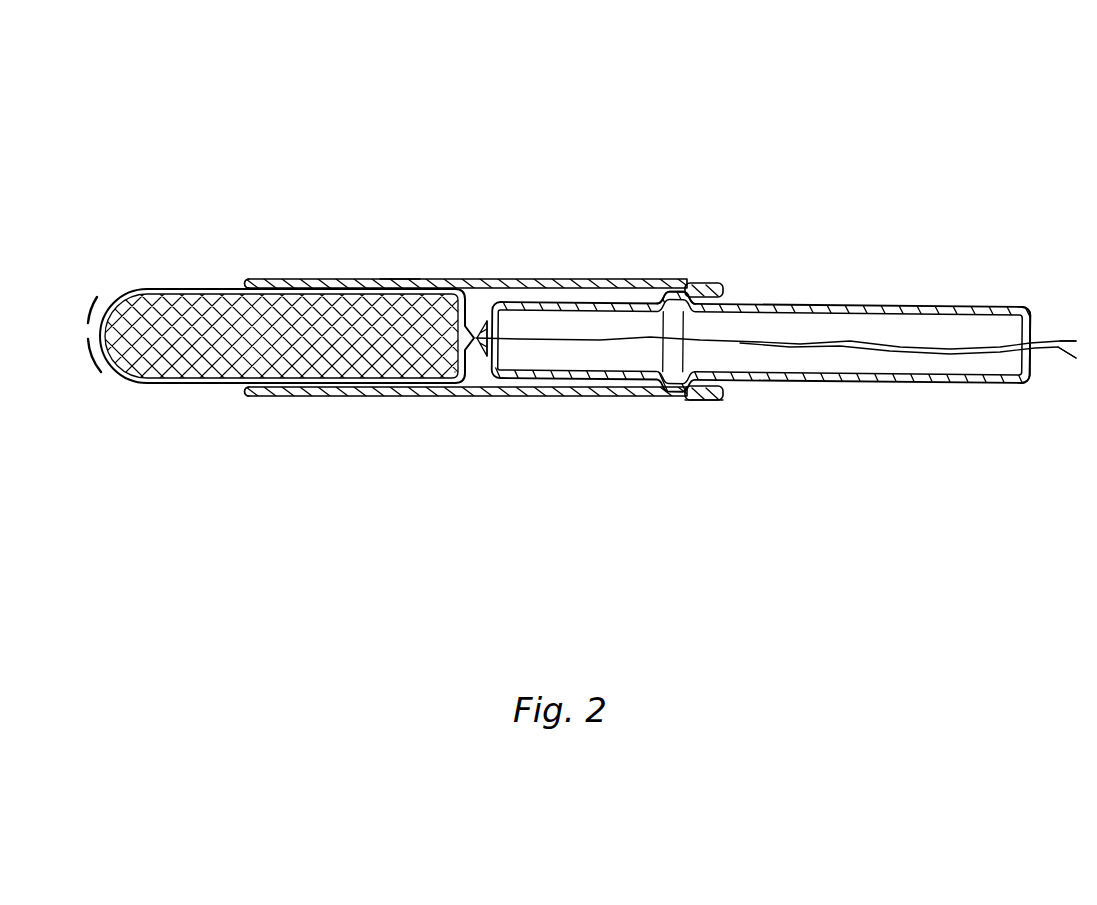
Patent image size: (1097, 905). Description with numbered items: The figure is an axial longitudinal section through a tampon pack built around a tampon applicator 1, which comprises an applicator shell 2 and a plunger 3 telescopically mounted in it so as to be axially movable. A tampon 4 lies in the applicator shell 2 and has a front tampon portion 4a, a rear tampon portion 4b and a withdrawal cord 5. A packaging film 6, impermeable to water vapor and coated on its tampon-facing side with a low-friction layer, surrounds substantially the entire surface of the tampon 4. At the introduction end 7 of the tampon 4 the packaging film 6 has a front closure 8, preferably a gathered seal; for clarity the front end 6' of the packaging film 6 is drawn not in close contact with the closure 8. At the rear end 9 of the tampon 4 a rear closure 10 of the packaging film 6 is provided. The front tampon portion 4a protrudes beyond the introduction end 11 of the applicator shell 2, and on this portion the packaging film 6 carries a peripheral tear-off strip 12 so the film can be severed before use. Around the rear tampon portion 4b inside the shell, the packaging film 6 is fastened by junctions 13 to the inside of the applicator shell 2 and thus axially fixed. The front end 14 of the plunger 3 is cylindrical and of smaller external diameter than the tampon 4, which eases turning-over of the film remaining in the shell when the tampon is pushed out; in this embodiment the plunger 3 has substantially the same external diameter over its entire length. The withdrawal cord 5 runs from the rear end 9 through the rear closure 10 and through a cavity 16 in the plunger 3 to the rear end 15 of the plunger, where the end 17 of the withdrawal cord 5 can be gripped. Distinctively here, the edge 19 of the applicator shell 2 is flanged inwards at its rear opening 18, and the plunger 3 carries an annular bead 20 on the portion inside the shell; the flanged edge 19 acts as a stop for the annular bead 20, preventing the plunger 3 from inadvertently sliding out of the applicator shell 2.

The tampon applicator 1 is at (706, 400).
The applicator shell 2 is at (322, 283).
The plunger 3 is at (793, 307).
The tampon 4 is at (194, 293).
The front tampon portion 4a is at (151, 348).
The rear tampon portion 4b is at (360, 345).
The withdrawal cord 5 is at (890, 347).
The packaging film 6 is at (281, 253).
The front end of the packaging film 6' is at (74, 215).
The introduction end of the tampon 7 is at (105, 368).
The front closure 8 is at (88, 340).
The rear end of the tampon 9 is at (450, 375).
The rear closure 10 is at (474, 345).
The introduction end of the applicator shell 11 is at (247, 280).
The tear-off strip 12 is at (222, 388).
The junctions 13 is at (400, 283).
The front end of the plunger 14 is at (487, 335).
The rear end of the plunger 15 is at (1025, 303).
The cavity 16 is at (935, 323).
The end of the withdrawal cord 17 is at (1063, 357).
The rear opening 18 is at (721, 283).
The flanged edge 19 is at (702, 397).
The annular bead 20 is at (668, 292).